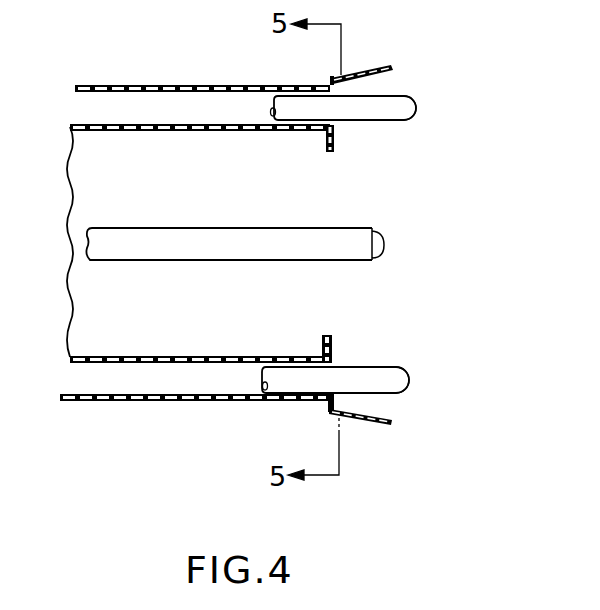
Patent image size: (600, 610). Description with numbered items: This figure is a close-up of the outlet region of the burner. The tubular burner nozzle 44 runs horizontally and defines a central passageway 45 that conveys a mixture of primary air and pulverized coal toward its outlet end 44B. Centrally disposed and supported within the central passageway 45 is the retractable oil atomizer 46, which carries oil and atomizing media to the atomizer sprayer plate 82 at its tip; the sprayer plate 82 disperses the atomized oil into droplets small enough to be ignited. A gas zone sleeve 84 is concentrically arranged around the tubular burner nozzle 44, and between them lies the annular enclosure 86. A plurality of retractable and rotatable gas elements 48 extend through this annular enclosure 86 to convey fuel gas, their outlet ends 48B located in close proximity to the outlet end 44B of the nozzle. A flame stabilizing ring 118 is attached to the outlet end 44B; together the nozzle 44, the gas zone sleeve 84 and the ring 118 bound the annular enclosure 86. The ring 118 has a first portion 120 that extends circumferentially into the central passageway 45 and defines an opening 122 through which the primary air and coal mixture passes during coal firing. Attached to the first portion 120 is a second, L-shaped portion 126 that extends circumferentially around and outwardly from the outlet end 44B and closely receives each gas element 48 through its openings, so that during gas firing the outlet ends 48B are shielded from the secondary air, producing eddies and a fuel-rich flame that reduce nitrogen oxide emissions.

The tubular burner nozzle 44 is at (80, 128).
The outlet end of tubular burner nozzle 44B is at (296, 357).
The central passageway 45 is at (202, 336).
The retractable oil atomizer 46 is at (257, 244).
The retractable and rotatable gas element 48 is at (328, 108).
The outlet end of gas element 48B is at (412, 104).
The atomizer sprayer plate 82 is at (384, 243).
The gas zone sleeve 84 is at (198, 85).
The annular enclosure 86 is at (160, 118).
The flame stabilizing ring 118 is at (342, 403).
The first portion of flame stabilizing ring 120 is at (336, 143).
The opening 122 is at (347, 212).
The second, L-shaped portion 126 is at (370, 70).